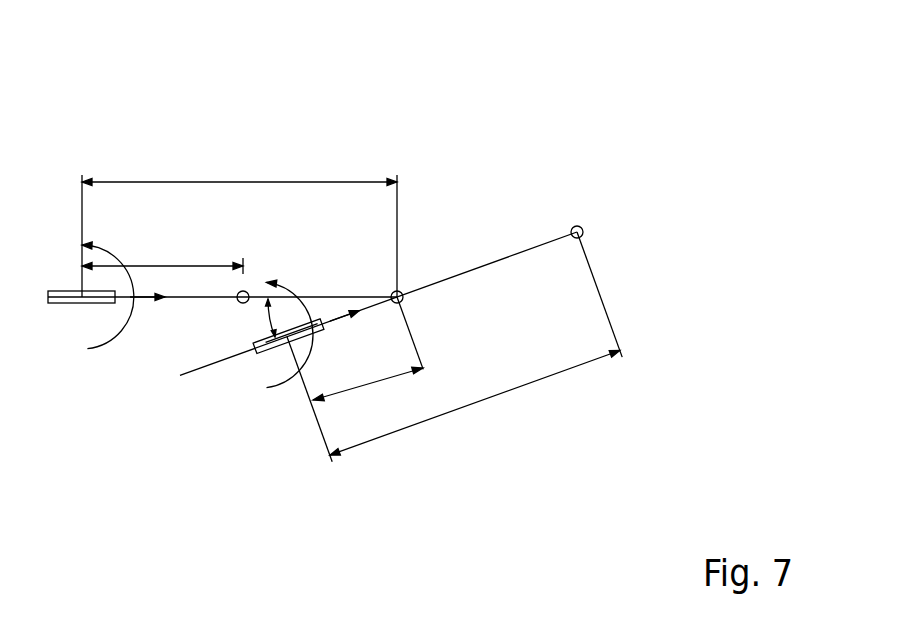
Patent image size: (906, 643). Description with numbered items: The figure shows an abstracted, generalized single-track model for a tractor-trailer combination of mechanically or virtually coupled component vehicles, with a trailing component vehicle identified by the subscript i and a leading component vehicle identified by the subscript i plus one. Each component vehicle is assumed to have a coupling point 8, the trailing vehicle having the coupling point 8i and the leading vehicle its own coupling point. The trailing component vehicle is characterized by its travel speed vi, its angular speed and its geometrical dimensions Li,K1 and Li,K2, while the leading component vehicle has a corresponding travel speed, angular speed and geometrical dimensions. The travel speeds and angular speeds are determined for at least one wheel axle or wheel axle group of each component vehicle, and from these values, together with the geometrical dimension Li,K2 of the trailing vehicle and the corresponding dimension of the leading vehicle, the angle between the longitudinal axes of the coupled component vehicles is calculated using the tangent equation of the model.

The coupling point 8 is at (340, 276).
The coupling point of trailing component vehicle 8i is at (247, 291).
The geometrical dimension of trailing component vehicle Li,K2 is at (212, 182).
The geometrical dimension of trailing component vehicle Li,K1 is at (188, 266).
The travel speed of trailing component vehicle vi is at (138, 300).